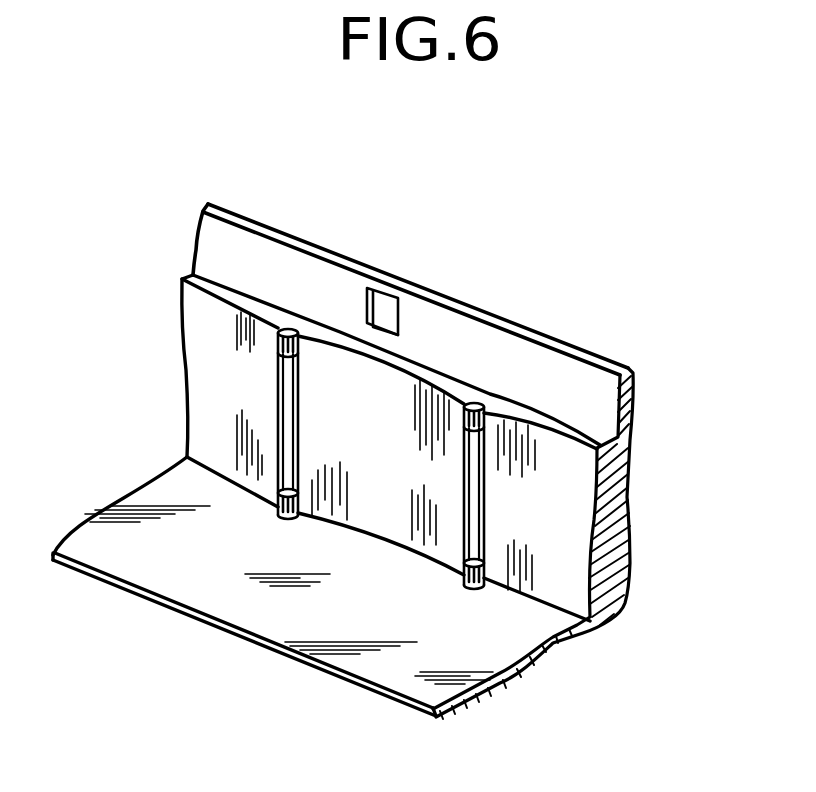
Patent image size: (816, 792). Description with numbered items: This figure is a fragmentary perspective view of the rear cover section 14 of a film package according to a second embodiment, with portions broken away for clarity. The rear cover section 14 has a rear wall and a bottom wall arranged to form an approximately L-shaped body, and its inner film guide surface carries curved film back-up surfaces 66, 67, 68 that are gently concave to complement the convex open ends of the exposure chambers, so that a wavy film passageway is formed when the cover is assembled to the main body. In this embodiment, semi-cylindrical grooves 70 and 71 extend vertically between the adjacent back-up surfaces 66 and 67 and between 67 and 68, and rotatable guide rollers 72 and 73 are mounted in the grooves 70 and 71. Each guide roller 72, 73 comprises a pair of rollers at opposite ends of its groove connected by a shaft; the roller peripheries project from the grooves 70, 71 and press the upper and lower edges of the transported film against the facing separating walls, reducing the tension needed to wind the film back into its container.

The rear cover section 14 is at (616, 347).
The film back-up surface 66 is at (198, 360).
The film back-up surface 67 is at (366, 511).
The film back-up surface 68 is at (552, 445).
The semi-cylindrical groove 70 is at (294, 410).
The semi-cylindrical groove 71 is at (480, 490).
The guide roller 72 is at (317, 322).
The guide roller 73 is at (506, 390).